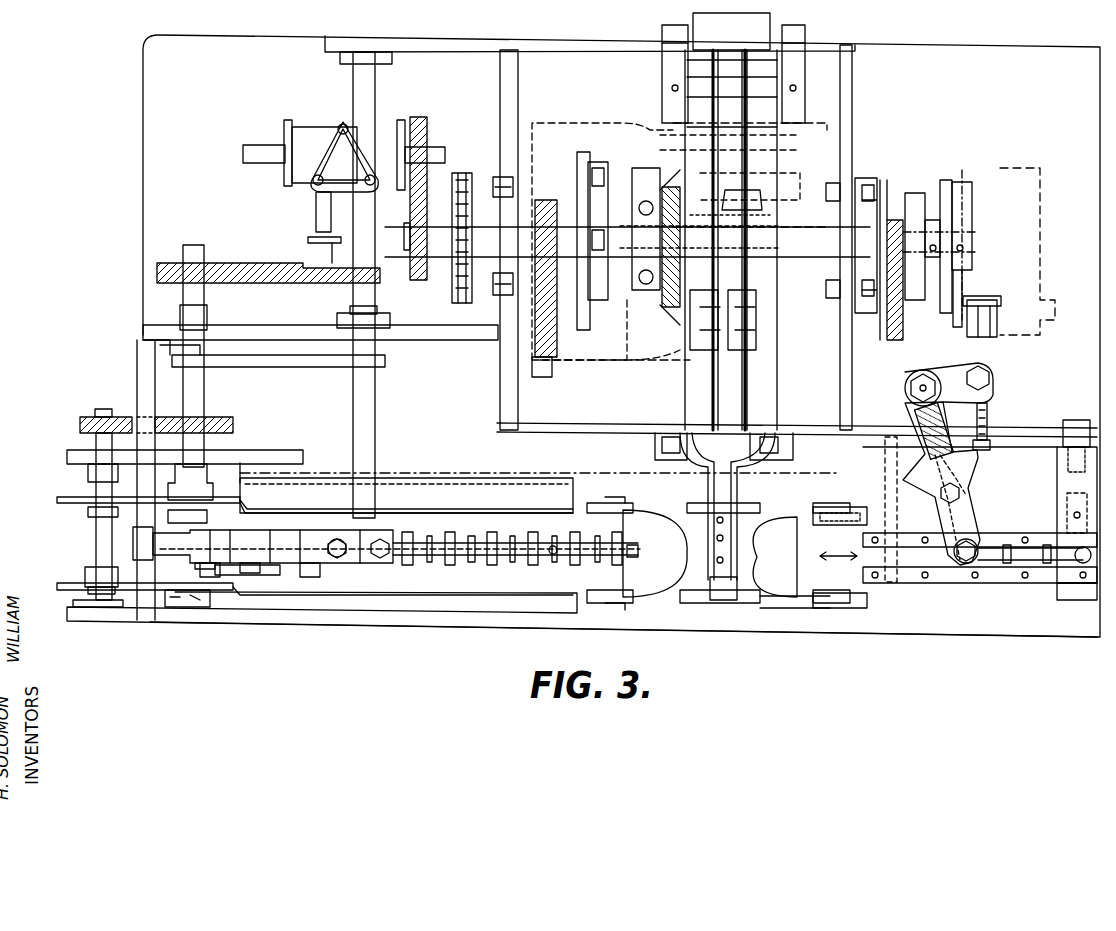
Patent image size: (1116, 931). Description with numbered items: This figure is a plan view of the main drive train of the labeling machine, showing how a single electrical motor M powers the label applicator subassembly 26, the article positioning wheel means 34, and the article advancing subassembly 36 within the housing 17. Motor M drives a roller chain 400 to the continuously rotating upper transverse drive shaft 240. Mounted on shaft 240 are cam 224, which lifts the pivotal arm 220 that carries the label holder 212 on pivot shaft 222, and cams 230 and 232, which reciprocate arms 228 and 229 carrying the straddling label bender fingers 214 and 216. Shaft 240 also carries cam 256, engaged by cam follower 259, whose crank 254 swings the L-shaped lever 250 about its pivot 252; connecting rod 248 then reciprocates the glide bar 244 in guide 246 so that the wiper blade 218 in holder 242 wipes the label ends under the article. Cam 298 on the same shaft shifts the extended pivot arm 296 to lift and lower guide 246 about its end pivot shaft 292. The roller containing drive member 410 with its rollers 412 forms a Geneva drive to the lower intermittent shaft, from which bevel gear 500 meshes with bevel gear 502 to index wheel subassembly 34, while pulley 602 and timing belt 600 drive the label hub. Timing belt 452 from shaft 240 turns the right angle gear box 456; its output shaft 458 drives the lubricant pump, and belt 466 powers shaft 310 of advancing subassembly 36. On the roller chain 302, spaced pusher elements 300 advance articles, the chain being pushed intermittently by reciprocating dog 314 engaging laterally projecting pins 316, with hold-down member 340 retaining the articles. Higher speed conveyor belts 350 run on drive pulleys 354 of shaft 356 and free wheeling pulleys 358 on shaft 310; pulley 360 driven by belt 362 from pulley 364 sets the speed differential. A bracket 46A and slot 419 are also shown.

The frame housing 17 is at (1010, 150).
The label applicator subassembly 26 is at (756, 498).
The article positioning wheel means 34 is at (673, 613).
The article advancing subassembly 36 is at (422, 575).
The support bracket 46A is at (335, 248).
The electrical motor M is at (580, 130).
The label holder 212 is at (722, 558).
The label bender finger 214 is at (740, 480).
The label bender finger 216 is at (708, 483).
The underside label wiper means 218 is at (785, 600).
The pivotal arm 220 is at (750, 118).
The pivot shaft 222 is at (800, 90).
The cam 224 is at (772, 170).
The arm 228 is at (757, 350).
The arm 229 is at (685, 360).
The cam 230 is at (772, 216).
The cam 232 is at (700, 218).
The upper transverse drive shaft 240 is at (442, 265).
The holder 242 is at (770, 547).
The glide bar 244 is at (797, 565).
The guide 246 is at (940, 585).
The connecting rod 248 is at (1002, 548).
The L-shaped lever 250 is at (969, 505).
The pivot 252 is at (923, 382).
The crank 254 is at (985, 345).
The cam 256 is at (970, 296).
The cam follower 259 is at (965, 290).
The end pivot shaft 292 is at (1072, 592).
The extended pivot arm 296 is at (885, 485).
The cam 298 is at (892, 222).
The article pusher elements 300 is at (500, 585).
The roller chain 302 is at (540, 545).
The shaft 310 is at (200, 392).
The reciprocating dog 314 is at (472, 565).
The laterally projecting pins 316 is at (478, 545).
The hold-down member 340 is at (268, 572).
The conveyor belts 350 is at (57, 585).
The drive pulleys 354 is at (100, 515).
The shaft 356 is at (112, 600).
The free wheeling pulleys 358 is at (190, 488).
The pulley 360 is at (90, 416).
The belt 362 is at (138, 420).
The pulley 364 is at (225, 422).
The roller chain 400 is at (462, 172).
The drive member 410 is at (593, 229).
The rollers 412 is at (612, 170).
The slot 419 is at (599, 267).
The timing belt 452 is at (416, 130).
The gear box 456 is at (305, 135).
The output shaft 458 is at (252, 147).
The belt 466 is at (255, 272).
The bevel gear 500 is at (672, 302).
The bevel gear 502 is at (782, 196).
The timing belt 600 is at (540, 330).
The pulley 602 is at (555, 205).